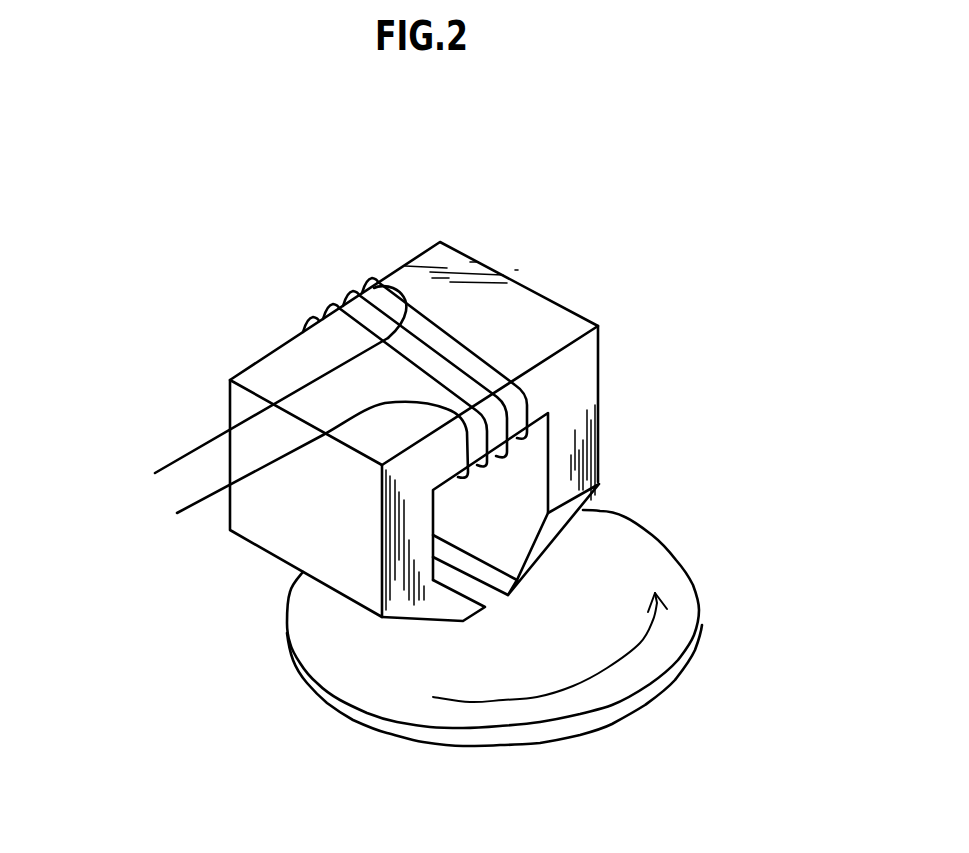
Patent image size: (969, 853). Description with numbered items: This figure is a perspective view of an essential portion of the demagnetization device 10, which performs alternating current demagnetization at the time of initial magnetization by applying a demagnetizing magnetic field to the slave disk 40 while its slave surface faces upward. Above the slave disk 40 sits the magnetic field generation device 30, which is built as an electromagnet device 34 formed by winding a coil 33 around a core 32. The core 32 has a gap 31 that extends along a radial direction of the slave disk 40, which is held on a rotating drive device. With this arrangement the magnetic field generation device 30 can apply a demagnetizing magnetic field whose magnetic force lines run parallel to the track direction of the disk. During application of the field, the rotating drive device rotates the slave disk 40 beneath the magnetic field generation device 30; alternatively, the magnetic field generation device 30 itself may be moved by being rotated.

The demagnetization device 10 is at (112, 275).
The magnetic field generation device 30 is at (285, 331).
The gap 31 is at (497, 600).
The core 32 is at (567, 532).
The coil 33 is at (365, 290).
The electromagnet device 34 is at (520, 298).
The slave disk 40 is at (673, 650).